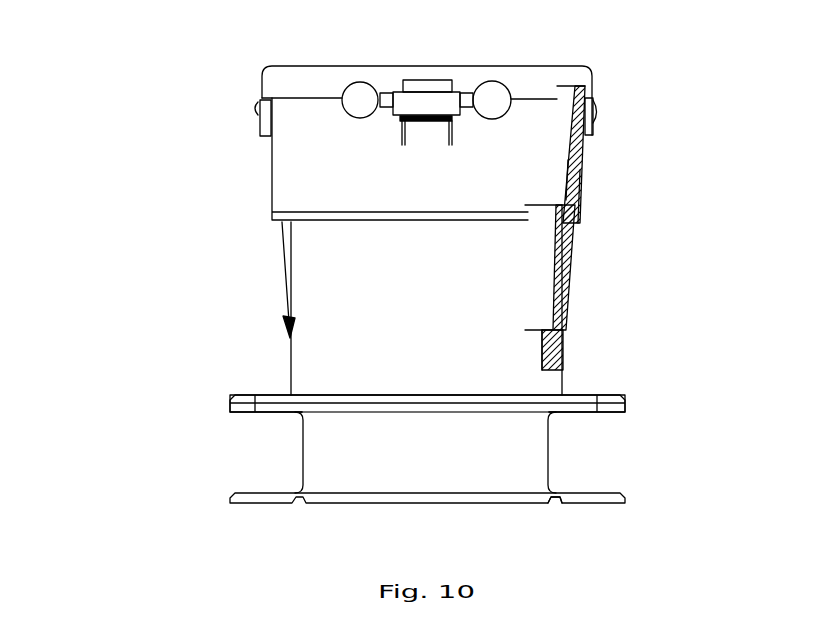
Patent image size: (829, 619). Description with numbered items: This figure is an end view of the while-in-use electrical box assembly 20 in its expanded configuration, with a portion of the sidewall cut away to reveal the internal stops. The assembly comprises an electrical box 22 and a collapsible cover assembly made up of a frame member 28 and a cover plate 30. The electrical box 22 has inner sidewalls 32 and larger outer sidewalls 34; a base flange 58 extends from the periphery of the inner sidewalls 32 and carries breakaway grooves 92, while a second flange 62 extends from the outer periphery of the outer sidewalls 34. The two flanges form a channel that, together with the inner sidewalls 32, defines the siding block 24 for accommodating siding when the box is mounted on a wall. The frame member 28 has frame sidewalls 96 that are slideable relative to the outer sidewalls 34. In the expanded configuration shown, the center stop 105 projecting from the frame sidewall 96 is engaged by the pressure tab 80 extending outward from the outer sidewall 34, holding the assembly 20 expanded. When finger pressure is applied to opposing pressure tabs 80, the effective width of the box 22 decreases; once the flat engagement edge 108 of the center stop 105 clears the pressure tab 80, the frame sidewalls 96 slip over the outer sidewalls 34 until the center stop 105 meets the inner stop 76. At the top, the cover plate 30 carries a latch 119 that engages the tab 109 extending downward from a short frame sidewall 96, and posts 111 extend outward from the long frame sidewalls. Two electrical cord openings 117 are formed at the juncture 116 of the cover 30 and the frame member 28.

The electrical box assembly 20 is at (152, 144).
The electrical box 22 is at (282, 257).
The siding block 24 is at (227, 400).
The frame member 28 is at (272, 210).
The cover plate 30 is at (260, 92).
The inner sidewalls 32 is at (452, 457).
The outer sidewalls 34 is at (553, 293).
The base flange 58 is at (625, 495).
The second flange 62 is at (625, 398).
The inner stop 76 is at (567, 327).
The pressure tab 80 is at (272, 178).
The breakaway grooves 92 is at (553, 503).
The frame sidewalls 96 is at (593, 127).
The center stop 105 is at (577, 197).
The flat engagement edge 108 is at (583, 190).
The tab 109 is at (426, 140).
The posts 111 is at (598, 104).
The juncture 116 is at (305, 98).
The electrical cord openings 117 is at (492, 100).
The latch 119 is at (427, 103).